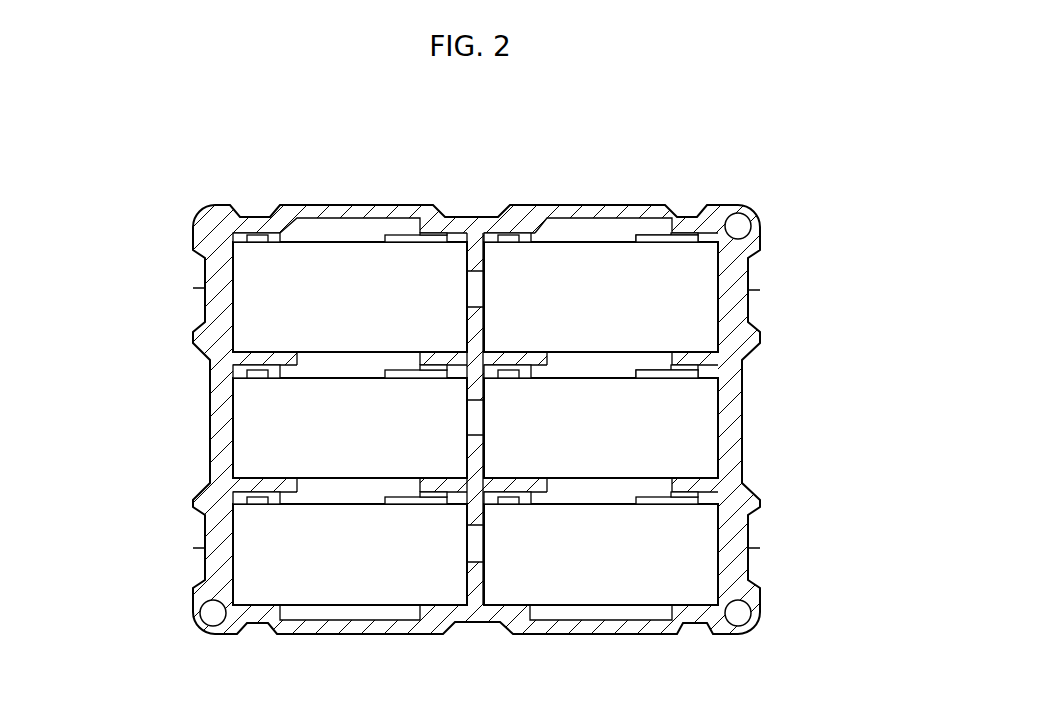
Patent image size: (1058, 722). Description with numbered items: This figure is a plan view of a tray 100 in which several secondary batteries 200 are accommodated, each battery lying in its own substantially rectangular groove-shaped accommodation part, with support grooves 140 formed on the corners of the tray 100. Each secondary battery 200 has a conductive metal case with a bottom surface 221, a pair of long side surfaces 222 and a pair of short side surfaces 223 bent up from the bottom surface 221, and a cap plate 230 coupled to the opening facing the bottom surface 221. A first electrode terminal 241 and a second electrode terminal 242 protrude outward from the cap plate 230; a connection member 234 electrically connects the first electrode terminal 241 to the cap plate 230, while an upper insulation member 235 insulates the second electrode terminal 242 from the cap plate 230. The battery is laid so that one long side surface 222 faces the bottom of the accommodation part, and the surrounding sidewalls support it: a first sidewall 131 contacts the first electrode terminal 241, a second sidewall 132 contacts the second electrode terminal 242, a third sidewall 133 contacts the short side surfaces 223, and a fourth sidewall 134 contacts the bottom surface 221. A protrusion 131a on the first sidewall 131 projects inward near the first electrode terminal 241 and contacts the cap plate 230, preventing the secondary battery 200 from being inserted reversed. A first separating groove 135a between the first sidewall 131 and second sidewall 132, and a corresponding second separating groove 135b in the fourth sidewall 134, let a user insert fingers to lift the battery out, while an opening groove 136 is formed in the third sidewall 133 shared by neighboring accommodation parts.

The tray 100 is at (143, 169).
The first sidewall 131 is at (510, 229).
The protrusion 131a is at (538, 233).
The second sidewall 132 is at (695, 222).
The third sidewall 133 is at (484, 265).
The fourth sidewall 134 is at (530, 360).
The first separating groove 135a is at (633, 218).
The second separating groove 135b is at (697, 353).
The opening groove 136 is at (475, 292).
The support groove 140 is at (735, 222).
The secondary battery 200 is at (612, 368).
The bottom surface 221 is at (347, 353).
The long side surface 222 is at (283, 320).
The short side surface 223 is at (491, 243).
The cap plate 230 is at (313, 240).
The connection member 234 is at (258, 242).
The upper insulation member 235 is at (398, 236).
The first electrode terminal 241 is at (255, 234).
The second electrode terminal 242 is at (432, 236).